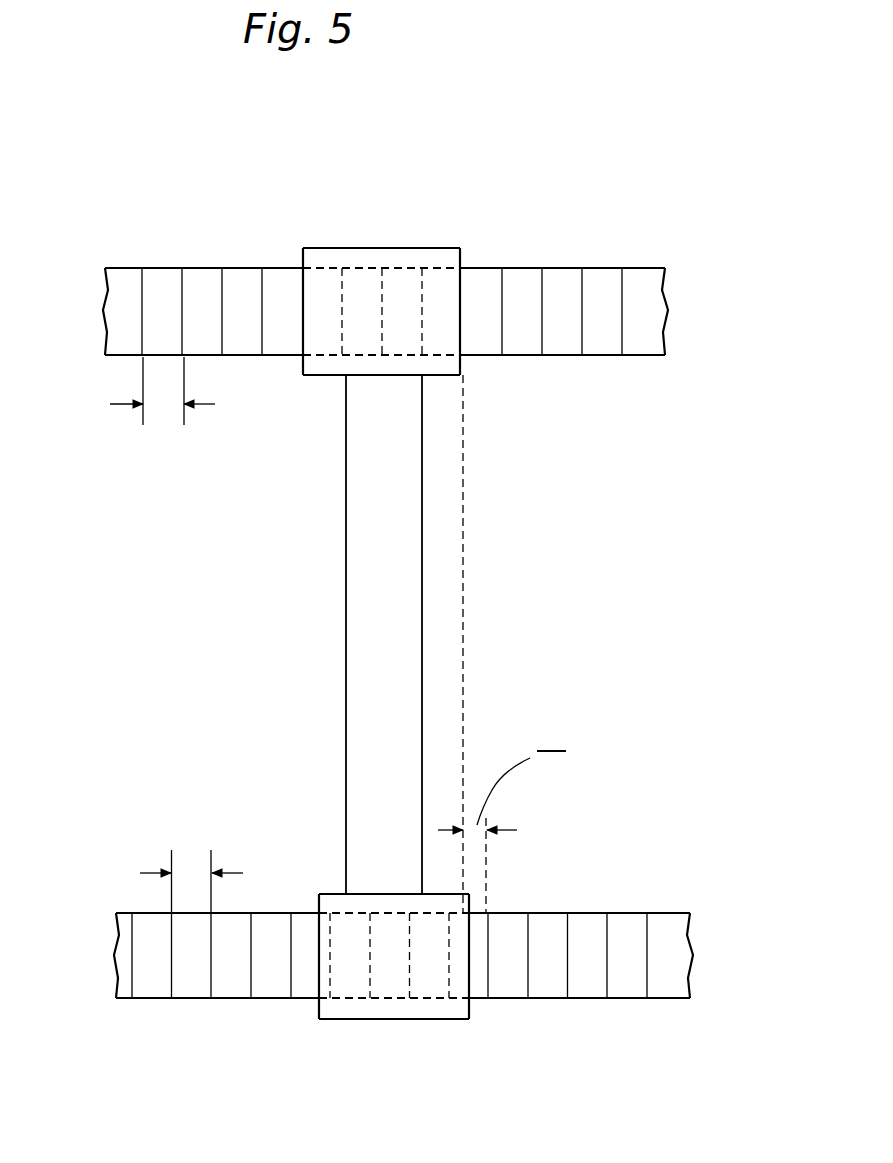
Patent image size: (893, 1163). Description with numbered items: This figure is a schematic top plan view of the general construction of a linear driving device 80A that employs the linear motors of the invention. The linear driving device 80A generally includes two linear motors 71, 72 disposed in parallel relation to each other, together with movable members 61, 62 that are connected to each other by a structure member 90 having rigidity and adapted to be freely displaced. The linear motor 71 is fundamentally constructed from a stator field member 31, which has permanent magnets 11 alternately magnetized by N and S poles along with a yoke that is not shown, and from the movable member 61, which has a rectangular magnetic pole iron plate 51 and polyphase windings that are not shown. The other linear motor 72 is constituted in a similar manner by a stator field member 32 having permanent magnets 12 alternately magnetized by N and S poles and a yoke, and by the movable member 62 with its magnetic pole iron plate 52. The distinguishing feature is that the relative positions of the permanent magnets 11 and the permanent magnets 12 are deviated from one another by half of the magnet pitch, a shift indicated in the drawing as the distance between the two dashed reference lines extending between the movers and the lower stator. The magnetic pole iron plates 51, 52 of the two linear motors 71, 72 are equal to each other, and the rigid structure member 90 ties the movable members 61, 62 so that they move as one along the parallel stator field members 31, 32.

The linear driving device 80A is at (500, 125).
The permanent magnets 11 is at (356, 311).
The permanent magnets 12 is at (374, 975).
The stator field member 31 is at (108, 305).
The stator field member 32 is at (115, 945).
The magnetic pole iron plate 51 is at (462, 251).
The magnetic pole iron plate 52 is at (462, 1020).
The movable member 61 is at (431, 266).
The movable member 62 is at (401, 956).
The linear motor 71 is at (467, 368).
The linear motor 72 is at (493, 893).
The structure member 90 is at (355, 607).